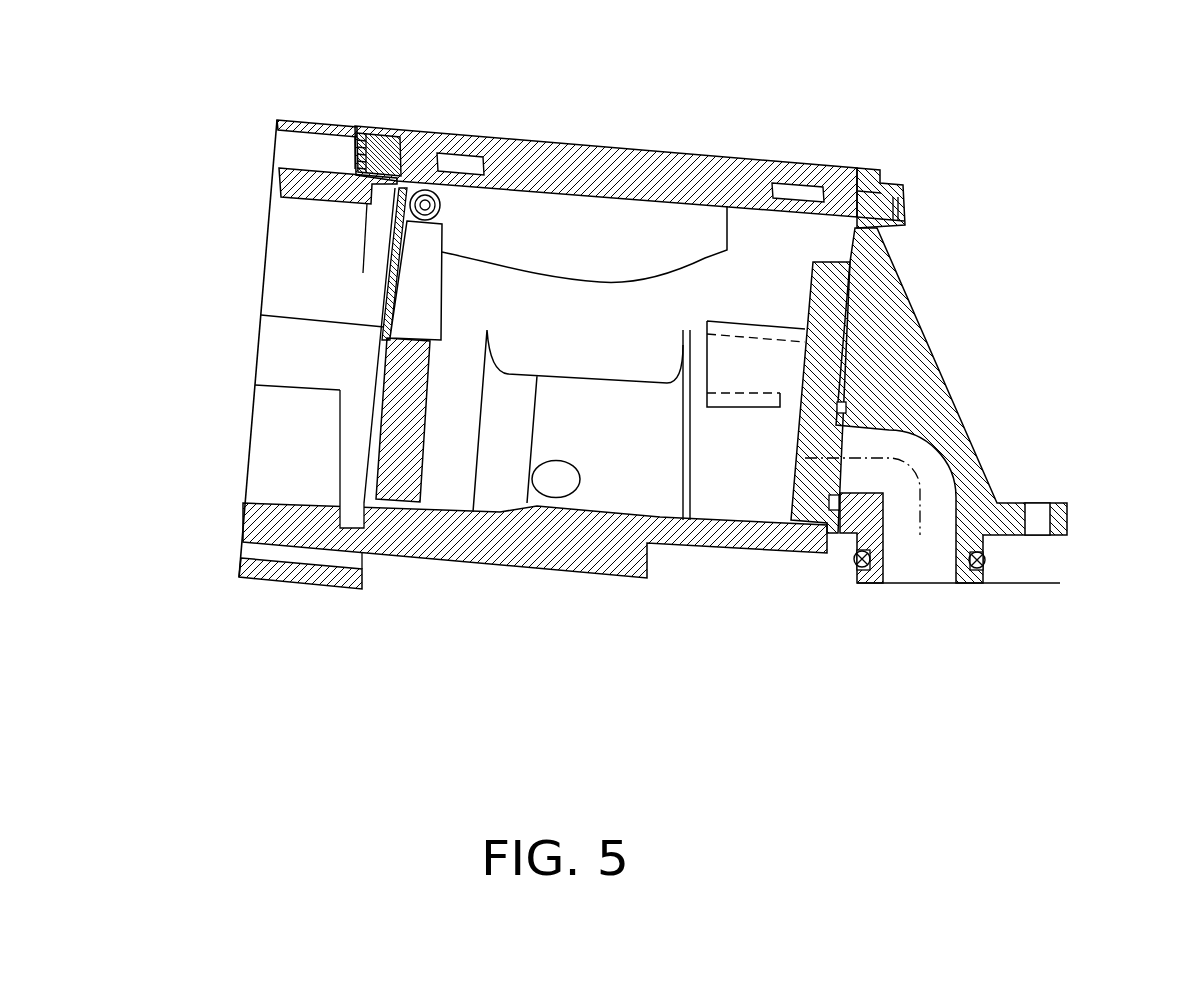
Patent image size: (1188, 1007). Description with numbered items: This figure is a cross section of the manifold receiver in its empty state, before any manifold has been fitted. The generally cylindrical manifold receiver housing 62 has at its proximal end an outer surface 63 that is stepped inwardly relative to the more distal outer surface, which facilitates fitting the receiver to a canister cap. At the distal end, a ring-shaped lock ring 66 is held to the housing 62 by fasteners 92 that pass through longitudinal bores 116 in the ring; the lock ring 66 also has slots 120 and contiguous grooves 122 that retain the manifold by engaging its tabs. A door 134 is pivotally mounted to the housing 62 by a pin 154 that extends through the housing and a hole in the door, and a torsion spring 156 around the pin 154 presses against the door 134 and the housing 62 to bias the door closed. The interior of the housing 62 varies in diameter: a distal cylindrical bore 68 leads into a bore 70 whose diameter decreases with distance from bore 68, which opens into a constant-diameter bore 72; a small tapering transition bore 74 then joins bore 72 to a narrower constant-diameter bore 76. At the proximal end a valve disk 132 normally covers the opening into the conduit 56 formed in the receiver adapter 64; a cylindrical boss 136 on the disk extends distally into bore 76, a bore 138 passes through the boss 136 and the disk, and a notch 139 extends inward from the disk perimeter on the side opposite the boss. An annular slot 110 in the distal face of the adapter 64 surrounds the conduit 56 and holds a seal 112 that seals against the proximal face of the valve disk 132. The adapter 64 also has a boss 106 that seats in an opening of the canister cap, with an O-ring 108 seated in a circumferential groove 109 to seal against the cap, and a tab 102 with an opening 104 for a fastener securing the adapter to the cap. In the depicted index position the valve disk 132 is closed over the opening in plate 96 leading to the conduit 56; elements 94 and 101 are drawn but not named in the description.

The conduit 56 is at (883, 495).
The manifold receiver housing 62 is at (549, 572).
The outer surface 63 is at (660, 540).
The receiver adapter 64 is at (940, 372).
The lock ring 66 is at (268, 582).
The cylindrical bore 68 is at (443, 502).
The bore 70 is at (495, 503).
The bore 72 is at (618, 495).
The transition bore 74 is at (683, 427).
The bore 76 is at (737, 507).
The fasteners 92 is at (368, 131).
The end nut 94 is at (903, 192).
The plate 96 is at (875, 227).
The mounting surface 101 is at (1022, 587).
The tab 102 is at (1068, 520).
The opening 104 is at (1040, 506).
The boss 106 is at (873, 587).
The O-ring 108 is at (962, 588).
The groove 109 is at (987, 573).
The annular slot 110 is at (865, 402).
The seal 112 is at (847, 528).
The bores 116 is at (290, 143).
The slots 120 is at (272, 370).
The grooves 122 is at (353, 410).
The valve disk 132 is at (810, 258).
The door 134 is at (430, 428).
The cylindrical boss 136 is at (742, 320).
The bore 138 is at (688, 363).
The notch 139 is at (795, 492).
The pin 154 is at (447, 226).
The torsion spring 156 is at (433, 198).